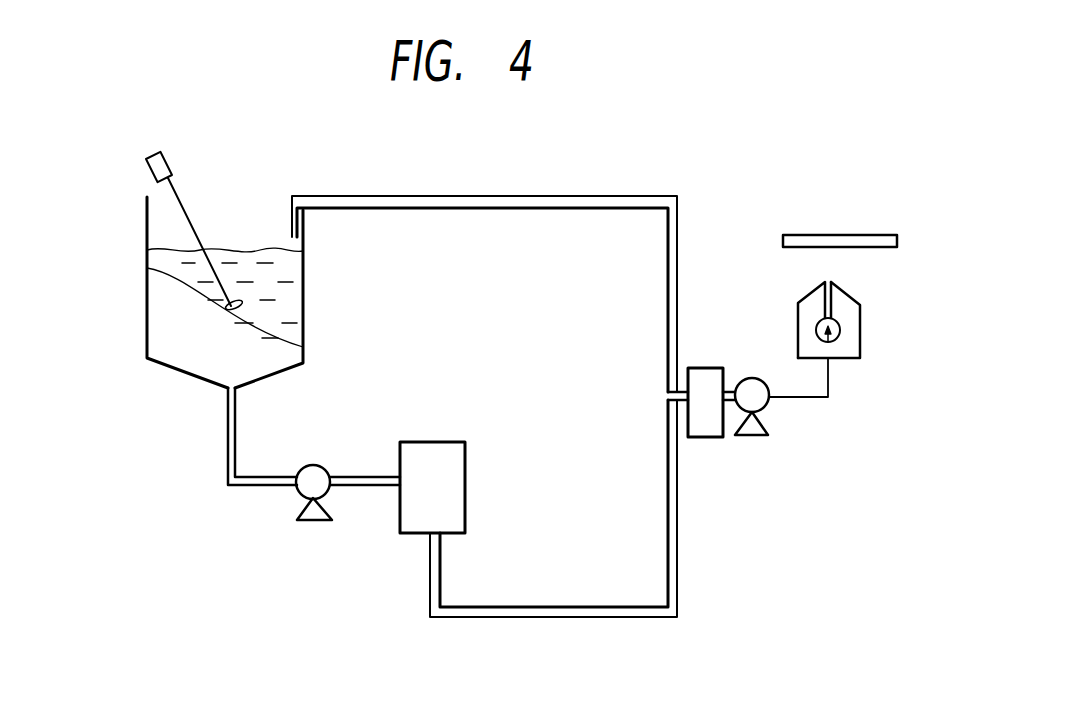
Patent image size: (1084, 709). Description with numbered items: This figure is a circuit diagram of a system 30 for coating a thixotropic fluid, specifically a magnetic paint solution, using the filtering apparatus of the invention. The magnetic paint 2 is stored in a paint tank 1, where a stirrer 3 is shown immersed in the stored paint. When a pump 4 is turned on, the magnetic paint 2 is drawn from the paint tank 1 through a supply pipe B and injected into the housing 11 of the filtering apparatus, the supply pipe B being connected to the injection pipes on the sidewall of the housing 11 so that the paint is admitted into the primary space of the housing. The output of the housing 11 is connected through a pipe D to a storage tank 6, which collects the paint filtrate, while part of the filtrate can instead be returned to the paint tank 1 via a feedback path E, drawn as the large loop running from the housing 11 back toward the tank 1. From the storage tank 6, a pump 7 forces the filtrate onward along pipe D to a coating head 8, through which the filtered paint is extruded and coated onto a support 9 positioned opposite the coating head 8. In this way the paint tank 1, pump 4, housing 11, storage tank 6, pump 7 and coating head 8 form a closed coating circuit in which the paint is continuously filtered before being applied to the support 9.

The paint tank 1 is at (147, 283).
The magnetic paint 2 is at (223, 258).
The stirrer 3 is at (267, 293).
The pump 4 is at (317, 462).
The storage tank 6 is at (703, 440).
The pump 7 is at (750, 377).
The coating head 8 is at (862, 320).
The support 9 is at (829, 235).
The housing 11 is at (447, 438).
The coating apparatus 30 is at (640, 122).
The supply pipe B is at (232, 490).
The pipe D is at (793, 398).
The feedback path E is at (508, 197).